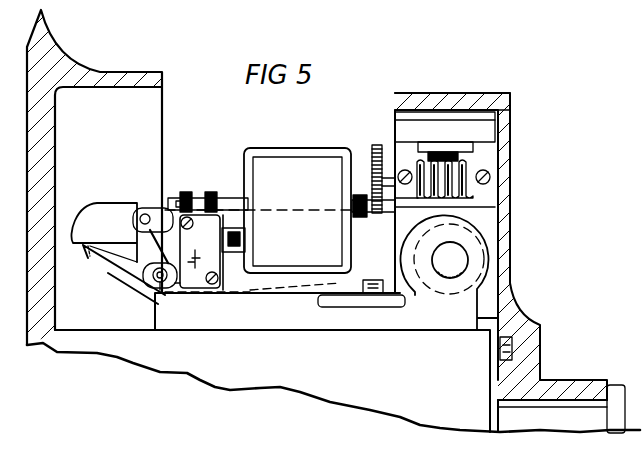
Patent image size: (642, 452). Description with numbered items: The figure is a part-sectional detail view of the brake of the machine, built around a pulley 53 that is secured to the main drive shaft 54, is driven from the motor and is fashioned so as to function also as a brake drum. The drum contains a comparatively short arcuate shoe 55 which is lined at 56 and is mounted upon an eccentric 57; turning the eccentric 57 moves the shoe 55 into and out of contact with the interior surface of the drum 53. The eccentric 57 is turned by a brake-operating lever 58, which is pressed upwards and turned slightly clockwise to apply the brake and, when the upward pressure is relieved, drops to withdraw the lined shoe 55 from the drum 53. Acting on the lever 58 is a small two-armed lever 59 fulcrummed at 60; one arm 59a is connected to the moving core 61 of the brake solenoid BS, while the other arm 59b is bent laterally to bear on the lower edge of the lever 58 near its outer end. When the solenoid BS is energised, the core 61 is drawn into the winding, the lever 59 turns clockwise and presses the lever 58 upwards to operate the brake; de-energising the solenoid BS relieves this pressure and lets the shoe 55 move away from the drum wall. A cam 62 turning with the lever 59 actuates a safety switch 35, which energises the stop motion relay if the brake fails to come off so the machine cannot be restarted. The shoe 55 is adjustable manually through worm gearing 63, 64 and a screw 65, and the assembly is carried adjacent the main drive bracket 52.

The main drive bracket 52 is at (50, 97).
The pulley 53 is at (500, 163).
The main drive shaft 54 is at (540, 418).
The shoe 55 is at (403, 130).
The lining 56 is at (445, 113).
The eccentric 57 is at (467, 242).
The brake-operating lever 58 is at (230, 263).
The two-armed lever 59 is at (150, 283).
The arm 59a is at (145, 236).
The arm 59b is at (106, 268).
The fulcrum 60 is at (160, 282).
The moving core 61 is at (235, 202).
The cam 62 is at (152, 290).
The worm gearing 63 is at (470, 192).
The worm gearing 64 is at (473, 160).
The screw 65 is at (480, 140).
The safety switch 35 is at (193, 280).
The brake solenoid BS is at (262, 173).